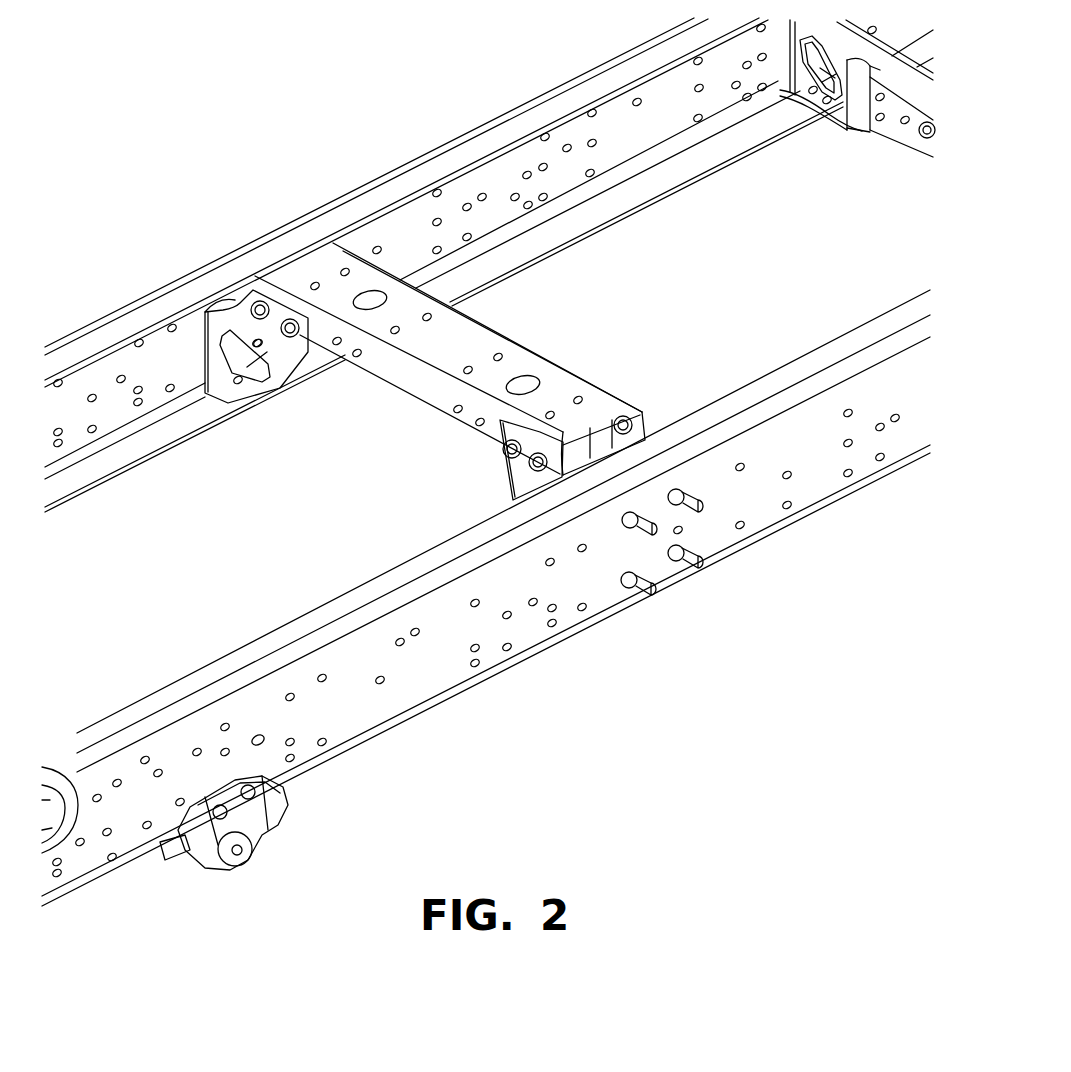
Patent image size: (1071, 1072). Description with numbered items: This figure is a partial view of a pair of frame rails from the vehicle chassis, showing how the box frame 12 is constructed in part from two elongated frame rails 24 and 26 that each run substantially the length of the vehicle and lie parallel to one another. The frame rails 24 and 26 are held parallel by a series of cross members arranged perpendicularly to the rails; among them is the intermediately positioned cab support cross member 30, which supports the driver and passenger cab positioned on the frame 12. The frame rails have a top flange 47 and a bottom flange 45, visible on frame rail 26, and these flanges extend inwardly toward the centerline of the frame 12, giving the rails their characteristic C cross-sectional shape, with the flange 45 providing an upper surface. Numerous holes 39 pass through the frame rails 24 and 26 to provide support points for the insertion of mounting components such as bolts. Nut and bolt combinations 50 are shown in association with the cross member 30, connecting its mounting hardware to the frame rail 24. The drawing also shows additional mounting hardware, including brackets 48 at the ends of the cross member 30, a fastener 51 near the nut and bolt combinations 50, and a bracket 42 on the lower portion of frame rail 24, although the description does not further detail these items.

The box frame 12 is at (582, 760).
The frame rail 24 is at (820, 503).
The frame rail 26 is at (624, 53).
The cab support cross member 30 is at (550, 356).
The holes 39 is at (507, 615).
The roller bracket 42 is at (283, 812).
The bottom flange 45 is at (735, 167).
The top flange 47 is at (837, 336).
The mounting bracket 48 is at (287, 383).
The nut and bolt combinations 50 is at (686, 497).
The fastener 51 is at (625, 592).